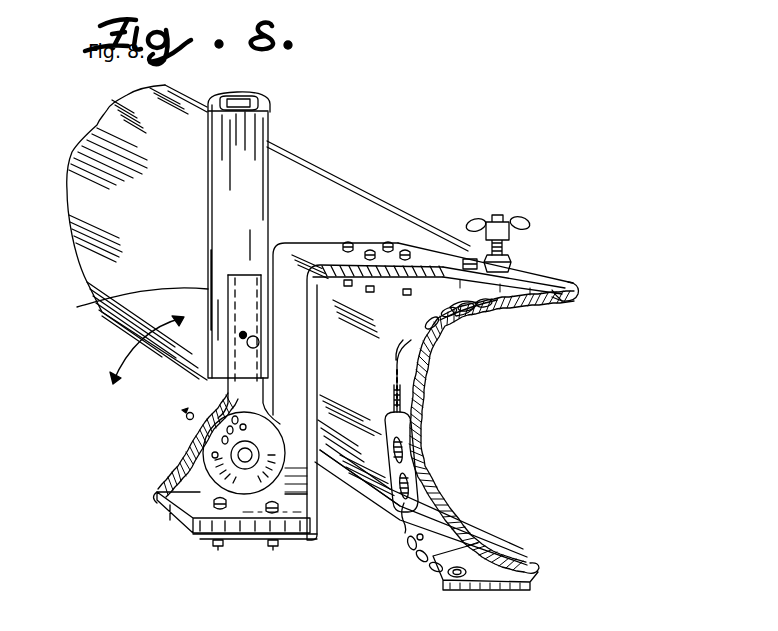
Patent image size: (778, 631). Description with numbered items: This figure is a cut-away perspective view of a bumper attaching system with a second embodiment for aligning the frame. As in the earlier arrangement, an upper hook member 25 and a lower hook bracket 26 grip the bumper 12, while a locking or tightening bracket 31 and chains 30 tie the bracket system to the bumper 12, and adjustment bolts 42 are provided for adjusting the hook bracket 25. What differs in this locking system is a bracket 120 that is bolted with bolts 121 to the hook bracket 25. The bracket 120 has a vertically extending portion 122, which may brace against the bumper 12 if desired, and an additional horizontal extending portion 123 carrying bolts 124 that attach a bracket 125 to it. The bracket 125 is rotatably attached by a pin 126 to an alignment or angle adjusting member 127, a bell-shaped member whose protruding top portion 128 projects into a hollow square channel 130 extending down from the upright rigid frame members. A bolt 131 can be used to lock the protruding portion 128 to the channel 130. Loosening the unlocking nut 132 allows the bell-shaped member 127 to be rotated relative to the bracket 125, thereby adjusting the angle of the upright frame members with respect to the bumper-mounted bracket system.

The bumper 12 is at (552, 304).
The upper hook member 25 is at (545, 270).
The lower hook bracket 26 is at (537, 560).
The chains 30 is at (462, 318).
The locking or tightening bracket 31 is at (420, 428).
The adjustment bolts 42 is at (498, 213).
The bracket 120 is at (320, 253).
The bolts 121 is at (404, 250).
The vertically extending portion 122 is at (312, 470).
The horizontal extending portion 123 is at (255, 540).
The bolts 124 is at (224, 548).
The bracket 125 is at (203, 505).
The pin 126 is at (167, 497).
The alignment or angle adjusting member 127 is at (200, 477).
The protruding top portion 128 is at (222, 392).
The hollow square channel 130 is at (97, 310).
The bolt 131 is at (243, 338).
The unlocking nut 132 is at (190, 416).